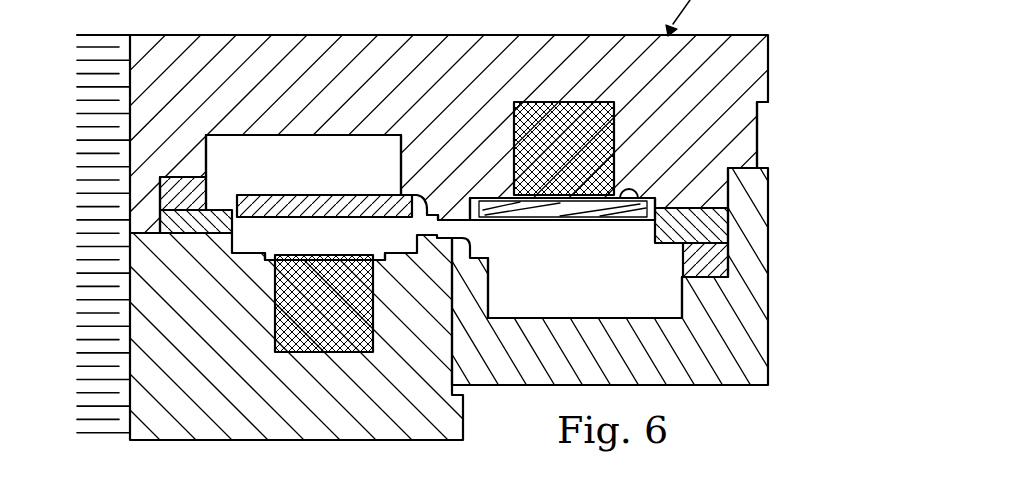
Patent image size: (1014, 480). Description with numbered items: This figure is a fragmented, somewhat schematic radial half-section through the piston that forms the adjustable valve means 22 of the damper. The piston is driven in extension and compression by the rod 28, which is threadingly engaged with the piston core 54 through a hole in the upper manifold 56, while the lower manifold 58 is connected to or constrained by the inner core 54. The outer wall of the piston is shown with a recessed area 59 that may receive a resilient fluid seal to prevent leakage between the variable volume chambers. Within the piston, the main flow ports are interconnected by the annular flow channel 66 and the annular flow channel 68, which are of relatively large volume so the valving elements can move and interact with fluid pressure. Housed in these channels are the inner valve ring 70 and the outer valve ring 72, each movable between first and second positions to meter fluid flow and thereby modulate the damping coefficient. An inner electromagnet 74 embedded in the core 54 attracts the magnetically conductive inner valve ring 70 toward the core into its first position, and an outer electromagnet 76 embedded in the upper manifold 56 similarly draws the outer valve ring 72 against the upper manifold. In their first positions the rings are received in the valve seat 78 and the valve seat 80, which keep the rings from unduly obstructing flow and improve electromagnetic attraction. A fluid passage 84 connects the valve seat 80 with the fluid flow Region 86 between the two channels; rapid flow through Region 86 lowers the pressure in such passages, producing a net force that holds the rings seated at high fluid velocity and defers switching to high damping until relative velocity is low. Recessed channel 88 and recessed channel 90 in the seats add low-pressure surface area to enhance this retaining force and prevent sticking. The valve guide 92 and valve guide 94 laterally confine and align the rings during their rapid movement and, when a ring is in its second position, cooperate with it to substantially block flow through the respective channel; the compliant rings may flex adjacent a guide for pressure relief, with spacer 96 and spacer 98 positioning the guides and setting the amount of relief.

The adjustable valve means 22 is at (770, 479).
The rod 28 is at (89, 35).
The piston core 54 is at (168, 432).
The upper manifold 56 is at (242, 45).
The lower manifold 58 is at (758, 368).
The recessed area 59 is at (757, 118).
The annular flow channel 66 is at (333, 177).
The annular flow channel 68 is at (657, 307).
The inner valve ring 70 is at (262, 197).
The outer valve ring 72 is at (550, 222).
The inner electromagnet 74 is at (345, 353).
The outer electromagnet 76 is at (547, 102).
The valve seat 78 is at (396, 257).
The valve seat 80 is at (474, 222).
The fluid passage 84 is at (644, 474).
The fluid flow Region 86 is at (442, 222).
The recessed channel 88 is at (272, 257).
The recessed channel 90 is at (625, 212).
The valve guide 92 is at (130, 229).
The valve guide 94 is at (718, 227).
The spacer 96 is at (160, 190).
The spacer 98 is at (723, 268).